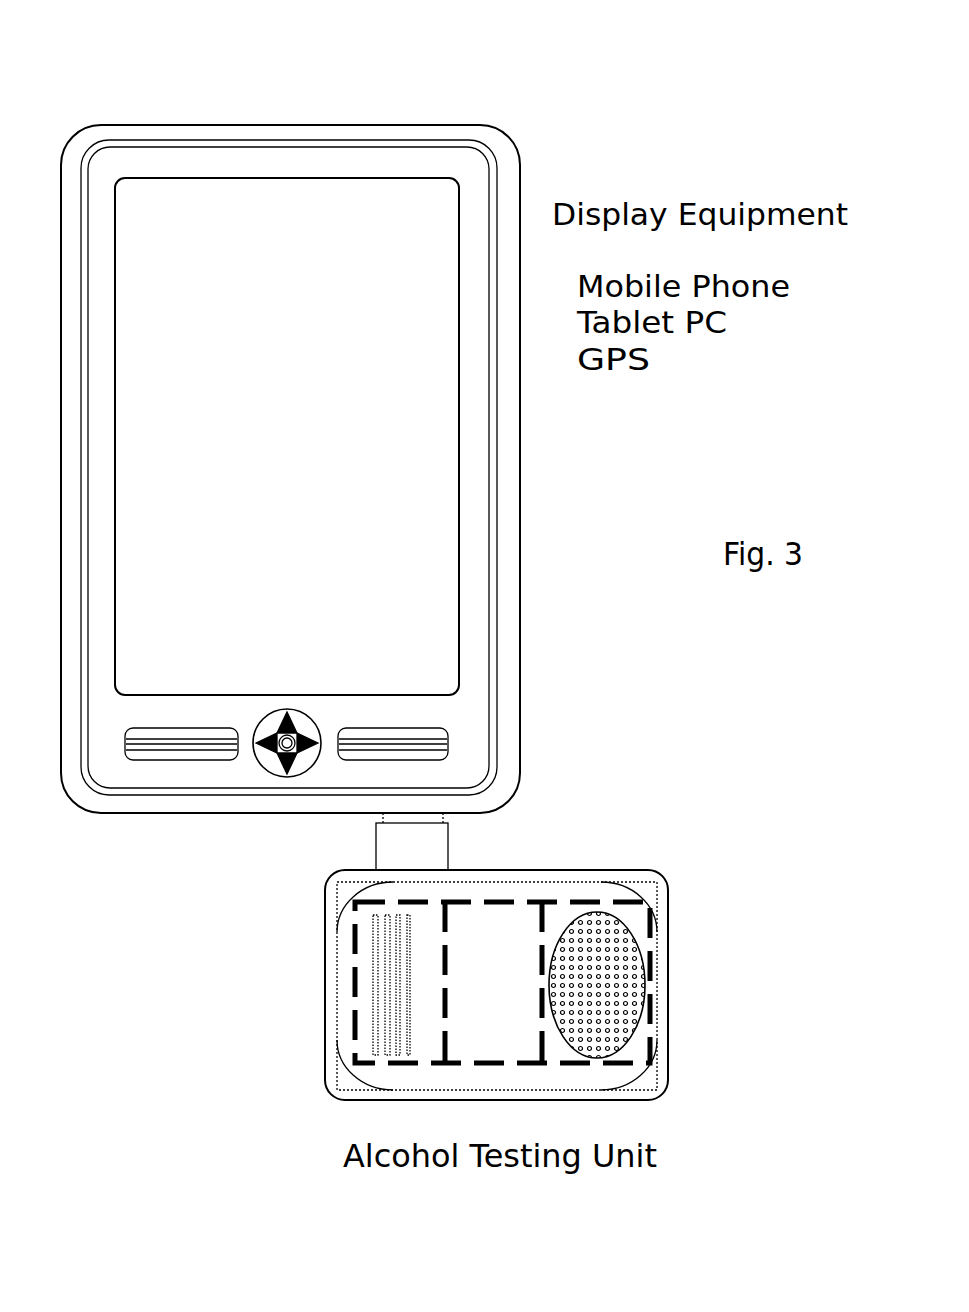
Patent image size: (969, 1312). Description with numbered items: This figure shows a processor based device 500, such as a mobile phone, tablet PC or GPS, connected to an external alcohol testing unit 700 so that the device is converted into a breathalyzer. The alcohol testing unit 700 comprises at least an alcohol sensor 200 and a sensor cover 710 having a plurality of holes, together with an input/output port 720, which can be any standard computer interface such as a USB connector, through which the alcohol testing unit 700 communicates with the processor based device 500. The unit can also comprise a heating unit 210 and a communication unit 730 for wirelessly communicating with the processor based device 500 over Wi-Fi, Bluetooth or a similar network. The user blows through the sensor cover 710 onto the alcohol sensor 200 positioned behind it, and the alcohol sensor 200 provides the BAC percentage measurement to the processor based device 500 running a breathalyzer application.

The processor based device 500 is at (332, 107).
The alcohol testing unit 700 is at (496, 1037).
The input/output port 720 is at (451, 852).
The alcohol sensor 200 is at (630, 917).
The heating unit 210 is at (498, 932).
The communication unit 730 is at (418, 1025).
The sensor cover 710 is at (643, 978).